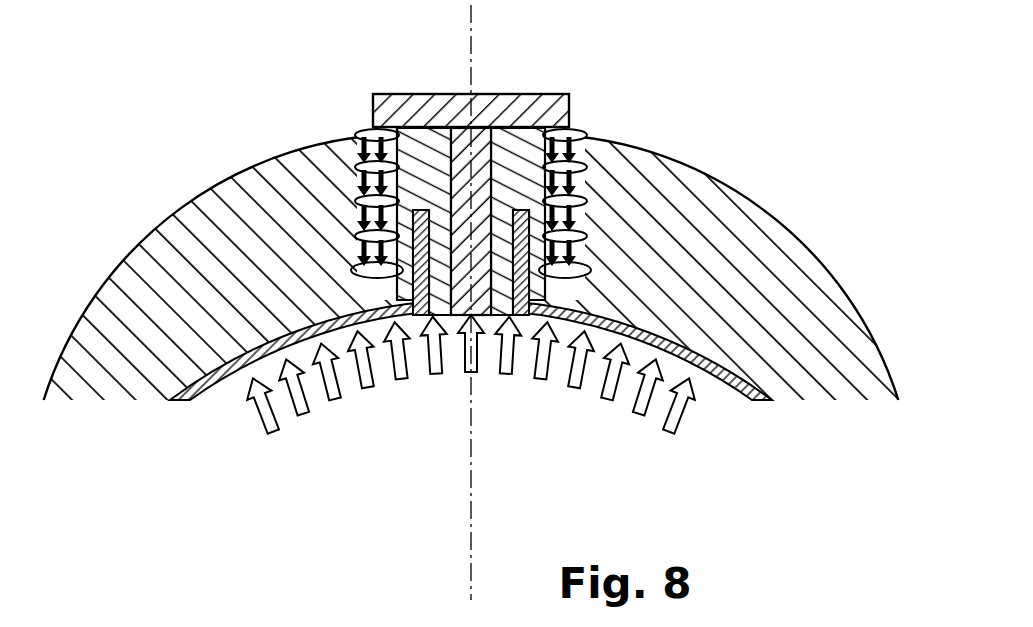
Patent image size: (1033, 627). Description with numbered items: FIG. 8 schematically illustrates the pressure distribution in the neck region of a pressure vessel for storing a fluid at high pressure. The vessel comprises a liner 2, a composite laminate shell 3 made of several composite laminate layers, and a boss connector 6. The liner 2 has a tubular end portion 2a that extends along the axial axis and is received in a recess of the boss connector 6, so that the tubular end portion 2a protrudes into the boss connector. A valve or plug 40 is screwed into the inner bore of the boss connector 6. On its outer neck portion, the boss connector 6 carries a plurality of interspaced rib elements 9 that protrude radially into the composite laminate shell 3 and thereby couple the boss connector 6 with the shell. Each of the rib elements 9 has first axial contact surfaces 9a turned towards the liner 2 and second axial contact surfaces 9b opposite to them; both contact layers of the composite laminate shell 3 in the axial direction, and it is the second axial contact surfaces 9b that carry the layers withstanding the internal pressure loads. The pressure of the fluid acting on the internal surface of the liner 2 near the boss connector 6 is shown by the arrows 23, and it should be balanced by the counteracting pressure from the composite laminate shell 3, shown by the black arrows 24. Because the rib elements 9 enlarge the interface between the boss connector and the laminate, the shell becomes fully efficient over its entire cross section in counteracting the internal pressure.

The liner 2 is at (200, 404).
The tubular end portion 2a is at (416, 210).
The composite laminate shell 3 is at (130, 382).
The boss connector 6 is at (513, 170).
The interspaced rib elements 9 is at (524, 169).
The first axial contact surfaces 9a is at (600, 232).
The second axial contact surfaces 9b is at (585, 182).
The arrows 23 is at (308, 420).
The black arrows 24 is at (366, 250).
The plug 40 is at (410, 106).